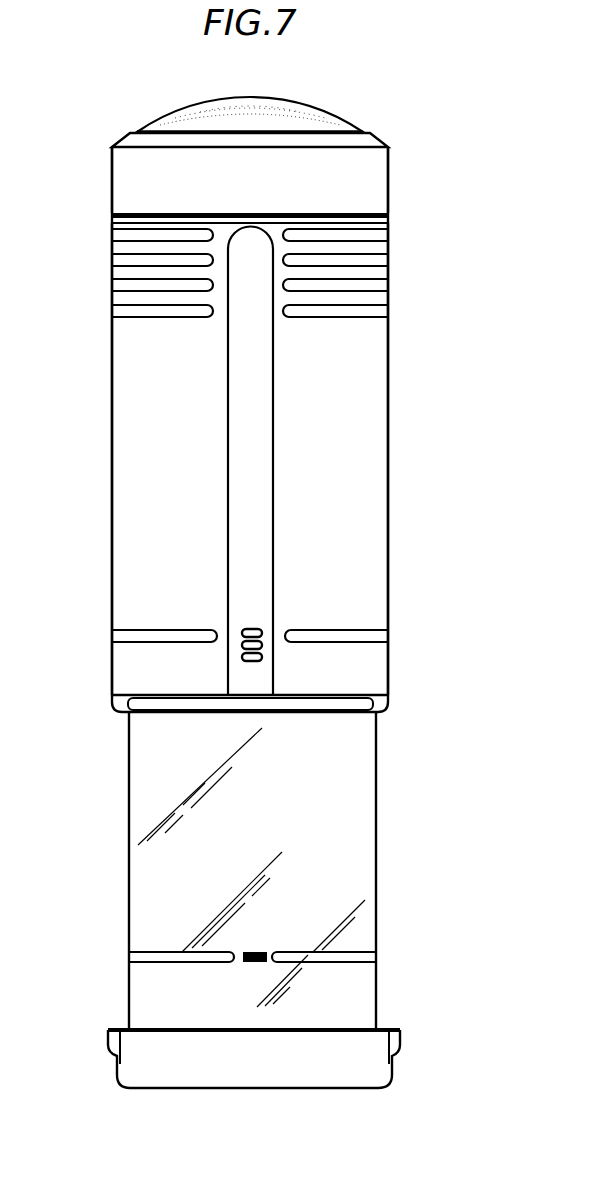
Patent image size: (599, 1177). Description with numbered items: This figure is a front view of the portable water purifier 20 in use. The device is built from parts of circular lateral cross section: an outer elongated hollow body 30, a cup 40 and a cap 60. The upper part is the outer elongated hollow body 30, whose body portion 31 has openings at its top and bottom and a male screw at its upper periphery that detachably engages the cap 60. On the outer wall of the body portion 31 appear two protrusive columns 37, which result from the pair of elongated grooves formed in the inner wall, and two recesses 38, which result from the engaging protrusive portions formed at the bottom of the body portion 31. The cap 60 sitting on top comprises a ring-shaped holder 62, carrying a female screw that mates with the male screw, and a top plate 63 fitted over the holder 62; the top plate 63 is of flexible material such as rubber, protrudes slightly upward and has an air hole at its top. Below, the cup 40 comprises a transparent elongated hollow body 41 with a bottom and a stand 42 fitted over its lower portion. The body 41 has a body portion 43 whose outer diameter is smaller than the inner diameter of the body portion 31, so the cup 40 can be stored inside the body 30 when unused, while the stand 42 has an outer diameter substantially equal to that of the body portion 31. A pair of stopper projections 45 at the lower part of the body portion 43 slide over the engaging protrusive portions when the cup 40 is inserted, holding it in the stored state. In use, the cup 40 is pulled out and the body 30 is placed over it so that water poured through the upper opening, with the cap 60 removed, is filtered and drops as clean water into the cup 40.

The portable water purifier 20 is at (268, 74).
The cap 60 is at (111, 131).
The ring-shaped holder 62 is at (367, 178).
The top plate 63 is at (303, 113).
The outer elongated hollow body 30 is at (390, 361).
The body portion 31 is at (365, 427).
The protrusive columns 37 is at (245, 433).
The recesses 38 is at (150, 633).
The cup 40 is at (378, 920).
The transparent elongated hollow body 41 is at (355, 863).
The body portion 43 is at (129, 873).
The stopper projections 45 is at (253, 965).
The stand 42 is at (325, 1065).